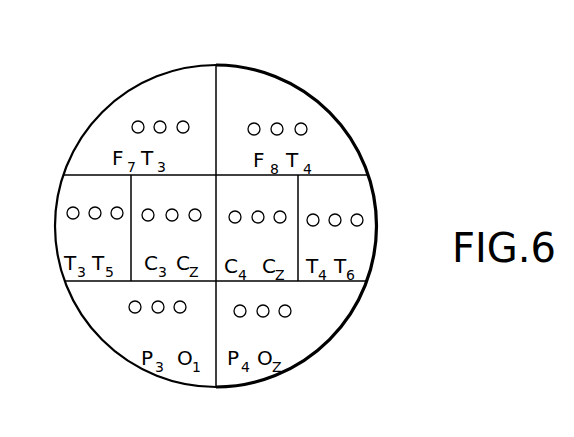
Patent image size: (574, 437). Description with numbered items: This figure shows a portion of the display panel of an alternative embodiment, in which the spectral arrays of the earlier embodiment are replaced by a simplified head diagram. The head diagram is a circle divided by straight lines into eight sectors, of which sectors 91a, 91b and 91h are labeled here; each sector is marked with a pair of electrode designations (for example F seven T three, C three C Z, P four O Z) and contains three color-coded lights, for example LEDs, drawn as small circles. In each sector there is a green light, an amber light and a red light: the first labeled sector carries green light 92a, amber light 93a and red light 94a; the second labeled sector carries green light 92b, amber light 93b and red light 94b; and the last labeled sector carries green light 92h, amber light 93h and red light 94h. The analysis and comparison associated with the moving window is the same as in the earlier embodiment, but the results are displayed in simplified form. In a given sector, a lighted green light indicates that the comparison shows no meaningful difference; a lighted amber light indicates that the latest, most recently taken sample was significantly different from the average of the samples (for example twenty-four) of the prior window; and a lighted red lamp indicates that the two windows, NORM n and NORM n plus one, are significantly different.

The sector 91a is at (93, 139).
The sector 91b is at (339, 158).
The sector 91h is at (333, 302).
The green light 92a is at (134, 122).
The amber light 93a is at (159, 121).
The red light 94a is at (184, 121).
The green light 92b is at (255, 123).
The amber light 93b is at (282, 124).
The red light 94b is at (306, 127).
The green light 92h is at (238, 317).
The amber light 93h is at (267, 316).
The red light 94h is at (290, 315).